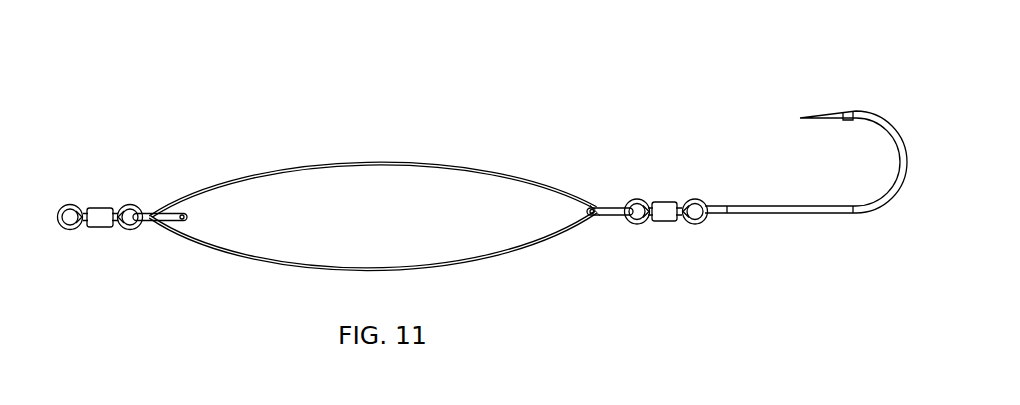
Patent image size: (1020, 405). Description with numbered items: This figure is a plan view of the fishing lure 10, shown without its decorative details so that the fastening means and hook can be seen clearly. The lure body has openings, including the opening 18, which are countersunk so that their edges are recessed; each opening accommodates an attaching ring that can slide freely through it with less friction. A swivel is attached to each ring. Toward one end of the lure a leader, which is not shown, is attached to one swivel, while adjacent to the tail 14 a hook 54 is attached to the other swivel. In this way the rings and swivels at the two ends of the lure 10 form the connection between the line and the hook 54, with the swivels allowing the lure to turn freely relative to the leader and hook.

The fishing lure 10 is at (483, 210).
The tail 14 is at (616, 203).
The opening 18 is at (597, 205).
The hook 54 is at (756, 206).